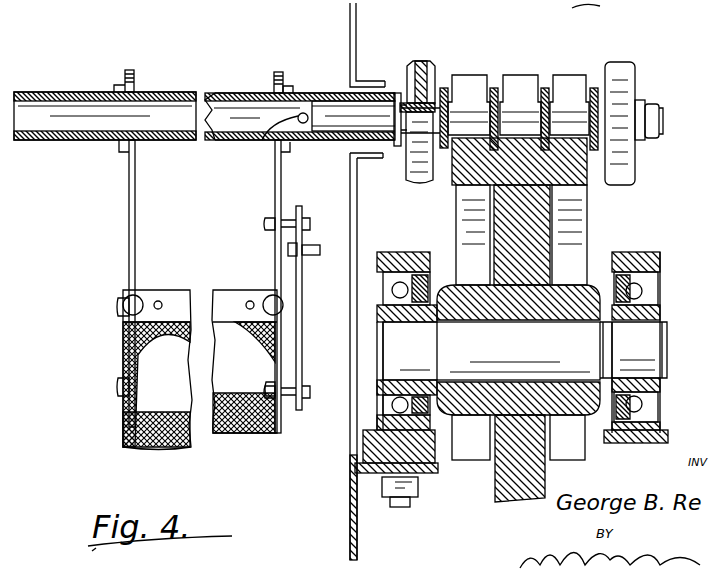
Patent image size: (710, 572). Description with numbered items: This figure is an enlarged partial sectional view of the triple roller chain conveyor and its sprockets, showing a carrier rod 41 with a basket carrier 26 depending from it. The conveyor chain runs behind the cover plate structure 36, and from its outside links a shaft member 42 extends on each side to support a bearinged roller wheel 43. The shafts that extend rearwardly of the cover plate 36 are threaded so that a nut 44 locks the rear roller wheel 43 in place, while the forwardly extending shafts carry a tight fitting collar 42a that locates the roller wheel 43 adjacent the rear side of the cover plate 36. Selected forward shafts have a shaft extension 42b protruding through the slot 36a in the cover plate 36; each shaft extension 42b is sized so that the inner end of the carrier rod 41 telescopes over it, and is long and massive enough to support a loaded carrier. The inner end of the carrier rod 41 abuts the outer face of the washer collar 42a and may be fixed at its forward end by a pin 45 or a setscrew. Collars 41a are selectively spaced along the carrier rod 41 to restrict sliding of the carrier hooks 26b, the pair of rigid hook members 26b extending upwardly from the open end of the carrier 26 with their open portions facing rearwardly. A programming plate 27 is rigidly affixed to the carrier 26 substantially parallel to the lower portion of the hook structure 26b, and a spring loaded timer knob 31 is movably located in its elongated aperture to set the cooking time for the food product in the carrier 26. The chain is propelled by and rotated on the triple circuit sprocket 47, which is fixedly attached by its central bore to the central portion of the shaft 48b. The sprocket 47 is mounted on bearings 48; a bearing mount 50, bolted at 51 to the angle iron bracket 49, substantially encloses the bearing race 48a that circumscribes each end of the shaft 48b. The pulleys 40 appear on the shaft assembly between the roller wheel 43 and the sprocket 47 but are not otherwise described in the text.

The carrier 26 is at (152, 355).
The hook members 26b is at (135, 76).
The programming plate 27 is at (302, 301).
The timer knob 31 is at (312, 244).
The cover plate structure 36 is at (350, 336).
The slot 36a is at (353, 147).
The pulley 40 is at (452, 85).
The carrier rod 41 is at (150, 143).
The collars 41a is at (122, 80).
The shaft member 42 is at (664, 126).
The collar 42a is at (397, 96).
The shaft extension 42b is at (334, 106).
The roller wheel 43 is at (424, 62).
The nut 44 is at (650, 104).
The pin 45 is at (262, 142).
The triple circuit sprocket 47 is at (520, 236).
The bearing 48 is at (618, 66).
The bearing race 48a is at (404, 262).
The shaft 48b is at (525, 351).
The angle iron bracket 49 is at (357, 528).
The bearing mount 50 is at (386, 262).
The bolt 51 is at (418, 487).